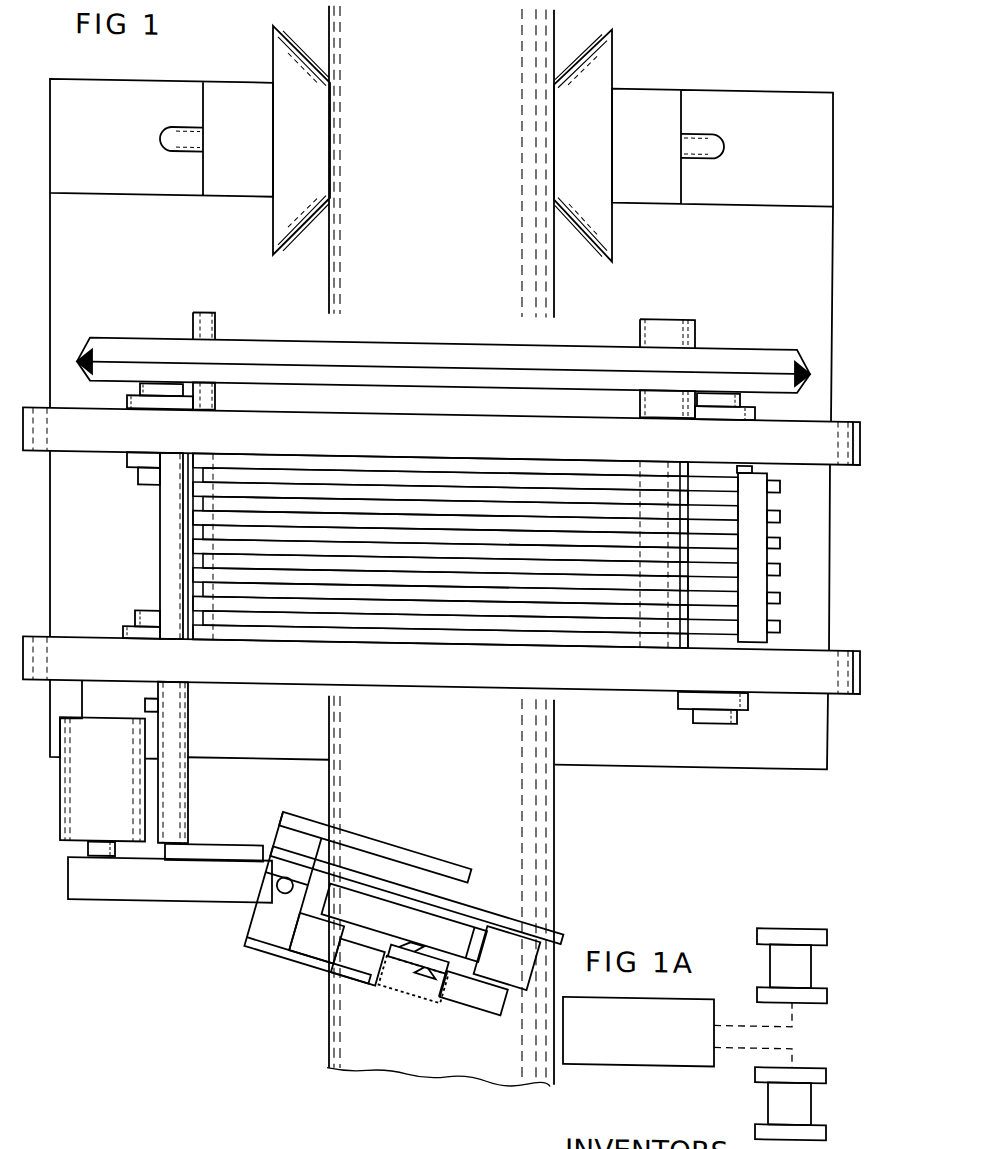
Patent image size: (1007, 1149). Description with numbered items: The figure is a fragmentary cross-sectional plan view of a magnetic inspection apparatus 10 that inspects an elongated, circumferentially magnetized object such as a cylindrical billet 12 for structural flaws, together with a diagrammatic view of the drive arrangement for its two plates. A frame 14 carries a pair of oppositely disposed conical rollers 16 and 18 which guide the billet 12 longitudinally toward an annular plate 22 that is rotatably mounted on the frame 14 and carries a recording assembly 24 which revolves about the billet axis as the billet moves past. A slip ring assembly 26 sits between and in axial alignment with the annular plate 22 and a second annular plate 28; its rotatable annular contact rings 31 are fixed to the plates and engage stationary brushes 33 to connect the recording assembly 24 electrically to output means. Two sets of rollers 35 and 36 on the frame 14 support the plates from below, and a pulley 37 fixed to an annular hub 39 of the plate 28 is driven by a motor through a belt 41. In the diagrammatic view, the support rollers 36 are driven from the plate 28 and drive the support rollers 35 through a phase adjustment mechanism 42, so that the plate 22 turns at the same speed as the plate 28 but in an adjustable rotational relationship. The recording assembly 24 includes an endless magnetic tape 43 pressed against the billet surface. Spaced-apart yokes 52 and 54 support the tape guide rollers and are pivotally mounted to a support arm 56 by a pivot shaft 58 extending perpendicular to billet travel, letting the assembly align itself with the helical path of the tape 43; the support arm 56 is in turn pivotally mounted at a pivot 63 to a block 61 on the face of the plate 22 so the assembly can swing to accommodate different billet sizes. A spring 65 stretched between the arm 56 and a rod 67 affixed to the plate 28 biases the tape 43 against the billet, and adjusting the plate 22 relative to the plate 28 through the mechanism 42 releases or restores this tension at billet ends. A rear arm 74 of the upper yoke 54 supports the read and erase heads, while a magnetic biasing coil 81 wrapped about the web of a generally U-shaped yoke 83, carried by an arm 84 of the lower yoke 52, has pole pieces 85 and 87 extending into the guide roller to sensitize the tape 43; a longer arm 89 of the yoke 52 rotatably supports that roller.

In FIG. 1, the magnetic inspection apparatus 10 is at (644, 867).
In FIG. 1, the cylindrical billet 12 is at (554, 770).
In FIG. 1, the frame 14 is at (673, 745).
In FIG. 1, the conical roller 16 is at (606, 218).
In FIG. 1, the conical roller 18 is at (278, 211).
In FIG. 1, the annular plate 22 is at (583, 667).
In FIG. 1, the recording assembly 24 is at (365, 924).
In FIG. 1, the slip ring assembly 26 is at (428, 550).
In FIG. 1, the second annular plate 28 is at (780, 440).
In FIG. 1, the rotatable annular contact rings 31 is at (206, 515).
In FIG. 1, the stationary brushes 33 is at (728, 476).
In FIG. 1, the support rollers 35 is at (130, 626).
In FIG. 1A, the support rollers 35 is at (810, 1062).
In FIG. 1, the support rollers 36 is at (135, 392).
In FIG. 1A, the support rollers 36 is at (810, 925).
In FIG. 1, the pulley 37 is at (443, 350).
In FIG. 1, the annular boss or hub 39 is at (275, 316).
In FIG. 1, the belt 41 is at (78, 356).
In FIG. 1A, the phase adjustment mechanism 42 is at (625, 1050).
In FIG. 1, the endless magnetic tape 43 is at (429, 934).
In FIG. 1, the lower yoke 52 is at (325, 898).
In FIG. 1, the upper yoke 54 is at (277, 911).
In FIG. 1, the support arm 56 is at (115, 883).
In FIG. 1, the pivot shaft 58 is at (285, 885).
In FIG. 1, the block 61 is at (65, 789).
In FIG. 1, the pivot 63 is at (92, 846).
In FIG. 1, the spring 65 is at (215, 845).
In FIG. 1, the rod 67 is at (172, 489).
In FIG. 1, the rear arm 74 is at (416, 895).
In FIG. 1, the magnetic biasing coil 81 is at (418, 959).
In FIG. 1, the U-shaped yoke 83 is at (474, 993).
In FIG. 1, the arm 84 is at (316, 938).
In FIG. 1, the pole piece 85 is at (414, 979).
In FIG. 1, the pole piece 87 is at (388, 972).
In FIG. 1, the longer arm 89 is at (375, 847).